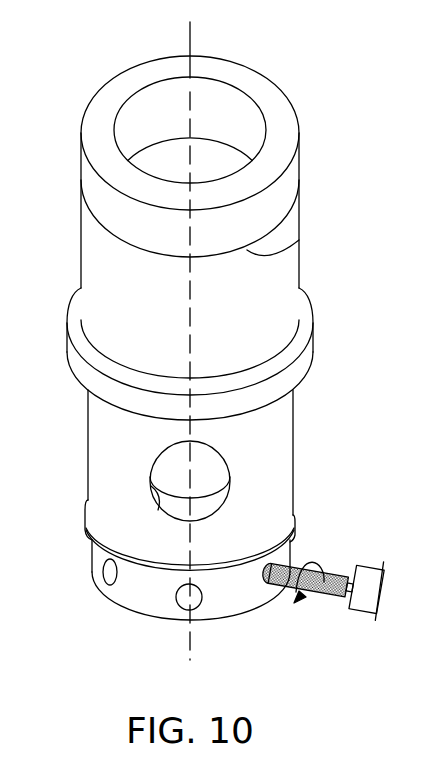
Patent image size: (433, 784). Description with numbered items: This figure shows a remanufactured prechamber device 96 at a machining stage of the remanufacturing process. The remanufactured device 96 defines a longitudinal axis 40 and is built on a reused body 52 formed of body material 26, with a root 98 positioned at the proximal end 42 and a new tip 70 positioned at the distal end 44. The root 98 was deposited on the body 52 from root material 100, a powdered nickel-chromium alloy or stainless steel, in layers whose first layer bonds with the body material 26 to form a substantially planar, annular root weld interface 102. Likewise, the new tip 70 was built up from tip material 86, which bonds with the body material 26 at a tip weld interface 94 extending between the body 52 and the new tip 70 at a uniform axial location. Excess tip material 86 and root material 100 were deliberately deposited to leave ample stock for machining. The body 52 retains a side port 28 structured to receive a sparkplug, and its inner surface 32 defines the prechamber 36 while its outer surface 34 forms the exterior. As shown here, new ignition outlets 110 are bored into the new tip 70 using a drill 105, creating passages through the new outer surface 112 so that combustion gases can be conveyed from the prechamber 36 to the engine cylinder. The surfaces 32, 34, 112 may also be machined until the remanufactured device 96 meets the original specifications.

The remanufactured prechamber device 96 is at (346, 70).
The longitudinal axis 40 is at (192, 36).
The proximal end 42 is at (70, 111).
The root 98 is at (81, 168).
The root material 100 is at (283, 190).
The root weld interface 102 is at (299, 240).
The body 52 is at (300, 273).
The body material 26 is at (278, 412).
The outer surface 34 is at (293, 465).
The side port 28 is at (232, 468).
The prechamber 36 is at (220, 457).
The inner surface 32 is at (148, 484).
The tip weld interface 94 is at (250, 548).
The new tip 70 is at (293, 538).
The drill 105 is at (358, 612).
The tip material 86 is at (102, 562).
The distal end 44 is at (95, 594).
The new outer surface 112 is at (148, 603).
The new ignition outlets 110 is at (197, 610).